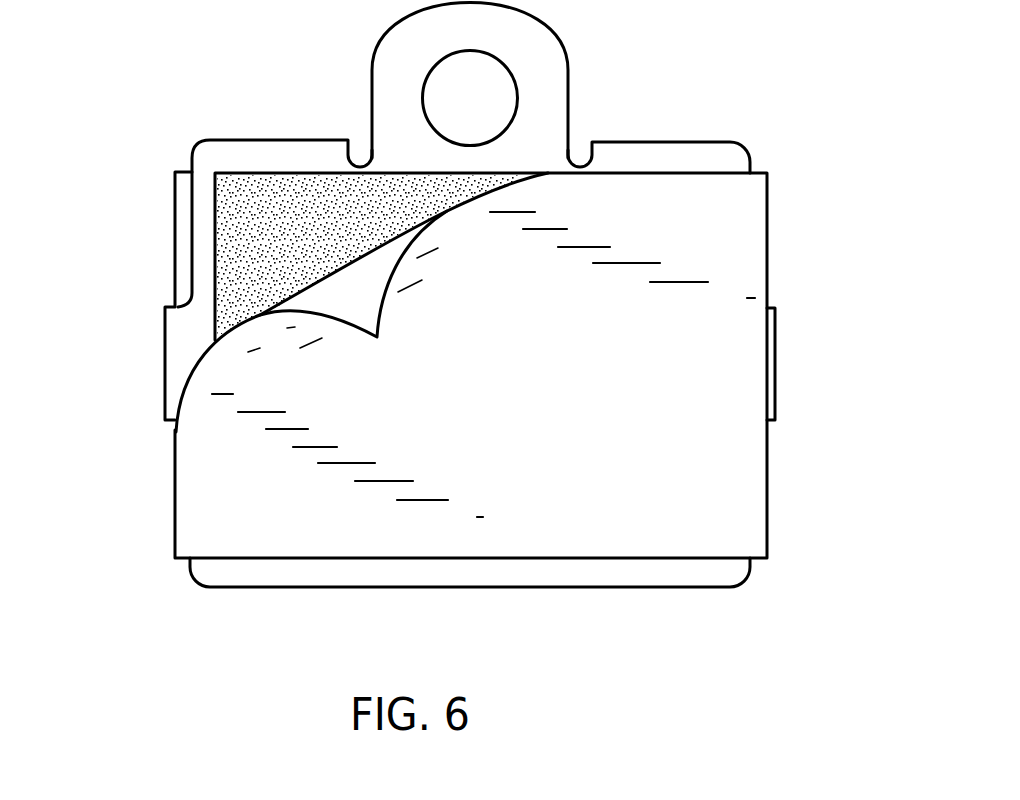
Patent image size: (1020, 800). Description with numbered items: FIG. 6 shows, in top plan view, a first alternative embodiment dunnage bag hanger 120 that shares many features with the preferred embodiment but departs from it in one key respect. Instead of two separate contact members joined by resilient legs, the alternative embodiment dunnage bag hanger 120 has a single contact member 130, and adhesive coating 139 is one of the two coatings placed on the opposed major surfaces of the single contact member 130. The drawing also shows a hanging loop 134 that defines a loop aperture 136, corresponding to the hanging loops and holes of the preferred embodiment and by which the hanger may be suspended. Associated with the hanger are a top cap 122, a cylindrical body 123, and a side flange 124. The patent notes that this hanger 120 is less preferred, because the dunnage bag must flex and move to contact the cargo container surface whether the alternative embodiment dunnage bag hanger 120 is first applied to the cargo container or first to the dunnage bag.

The alternative embodiment dunnage bag hanger 120 is at (225, 92).
The top cap 122 is at (335, 140).
The cylindrical body 123 is at (590, 398).
The side flange 124 is at (177, 187).
The single contact member 130 is at (708, 145).
The hanging loop 134 is at (563, 80).
The loop aperture 136 is at (497, 137).
The adhesive coating 139 is at (313, 254).